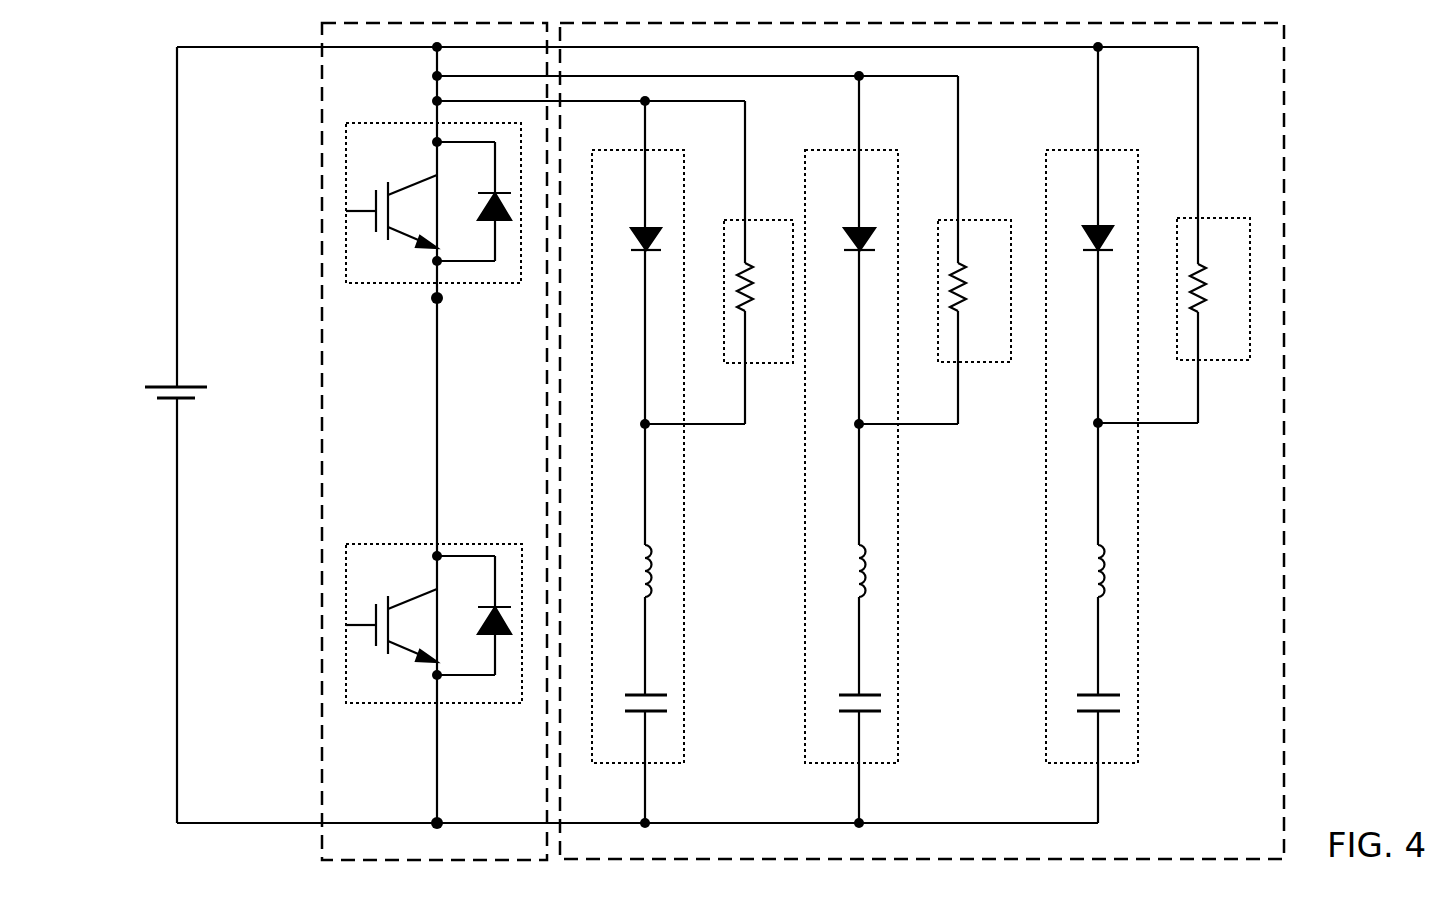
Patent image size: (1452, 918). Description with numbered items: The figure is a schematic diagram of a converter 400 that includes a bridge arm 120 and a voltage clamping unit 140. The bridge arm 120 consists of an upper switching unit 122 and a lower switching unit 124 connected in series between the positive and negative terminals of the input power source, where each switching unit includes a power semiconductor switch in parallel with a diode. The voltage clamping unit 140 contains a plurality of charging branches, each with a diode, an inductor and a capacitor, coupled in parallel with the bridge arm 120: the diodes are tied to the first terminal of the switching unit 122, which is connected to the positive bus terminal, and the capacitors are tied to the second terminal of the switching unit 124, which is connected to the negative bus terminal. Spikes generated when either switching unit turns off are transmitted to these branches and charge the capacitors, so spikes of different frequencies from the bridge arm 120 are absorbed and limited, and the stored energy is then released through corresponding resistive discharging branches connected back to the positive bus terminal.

The converter 400 is at (1379, 74).
The bridge arm 120 is at (322, 270).
The switching unit 122 is at (346, 182).
The switching unit 124 is at (346, 575).
The voltage clamping unit 140 is at (1284, 331).